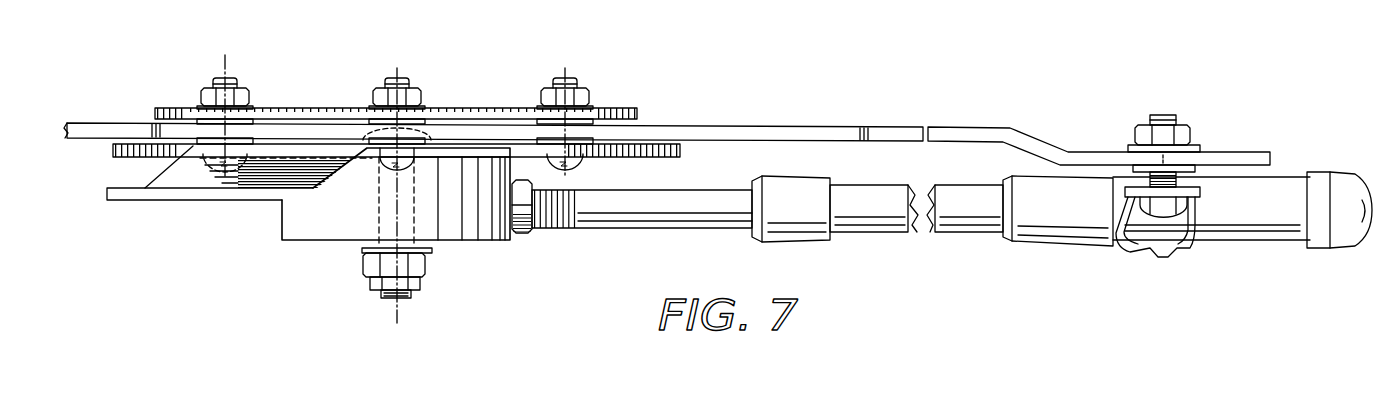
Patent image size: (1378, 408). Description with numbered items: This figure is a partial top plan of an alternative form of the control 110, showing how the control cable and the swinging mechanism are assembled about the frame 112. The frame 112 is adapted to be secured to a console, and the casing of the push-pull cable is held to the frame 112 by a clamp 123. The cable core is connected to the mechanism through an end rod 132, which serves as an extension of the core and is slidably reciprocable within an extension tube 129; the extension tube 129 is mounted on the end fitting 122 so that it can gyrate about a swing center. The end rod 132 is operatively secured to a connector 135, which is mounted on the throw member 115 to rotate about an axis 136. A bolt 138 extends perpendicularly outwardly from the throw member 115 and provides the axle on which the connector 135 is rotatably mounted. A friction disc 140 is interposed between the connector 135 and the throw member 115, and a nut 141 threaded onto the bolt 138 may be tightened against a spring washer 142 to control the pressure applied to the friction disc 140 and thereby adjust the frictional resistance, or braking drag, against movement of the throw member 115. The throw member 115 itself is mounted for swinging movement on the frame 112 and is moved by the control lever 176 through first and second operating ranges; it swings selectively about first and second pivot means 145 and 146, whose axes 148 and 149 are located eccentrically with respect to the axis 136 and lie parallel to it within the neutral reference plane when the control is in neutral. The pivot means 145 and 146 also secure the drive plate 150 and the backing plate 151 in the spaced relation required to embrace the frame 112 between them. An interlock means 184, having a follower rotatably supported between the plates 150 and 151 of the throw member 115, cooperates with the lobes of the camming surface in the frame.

The control 110 is at (178, 98).
The frame 112 is at (790, 130).
The throw member 115 is at (626, 163).
The end fitting 122 is at (1245, 215).
The clamp 123 is at (1150, 245).
The extension tube 129 is at (955, 215).
The end rod 132 is at (728, 218).
The connector 135 is at (284, 212).
The axis 136 is at (398, 312).
The bolt 138 is at (378, 293).
The friction disc 140 is at (432, 163).
The nut 141 is at (430, 262).
The spring washer 142 is at (362, 255).
The first pivot means 145 is at (240, 76).
The second pivot means 146 is at (581, 83).
The axis 148 is at (223, 62).
The axis 149 is at (568, 70).
The drive plate 150 is at (682, 150).
The backing plate 151 is at (628, 110).
The control lever 176 is at (194, 192).
The interlock means 184 is at (421, 84).